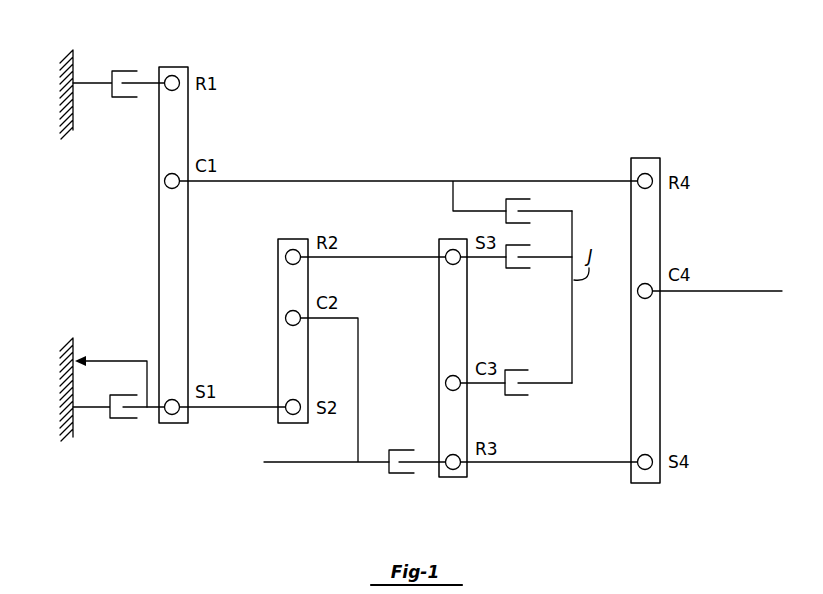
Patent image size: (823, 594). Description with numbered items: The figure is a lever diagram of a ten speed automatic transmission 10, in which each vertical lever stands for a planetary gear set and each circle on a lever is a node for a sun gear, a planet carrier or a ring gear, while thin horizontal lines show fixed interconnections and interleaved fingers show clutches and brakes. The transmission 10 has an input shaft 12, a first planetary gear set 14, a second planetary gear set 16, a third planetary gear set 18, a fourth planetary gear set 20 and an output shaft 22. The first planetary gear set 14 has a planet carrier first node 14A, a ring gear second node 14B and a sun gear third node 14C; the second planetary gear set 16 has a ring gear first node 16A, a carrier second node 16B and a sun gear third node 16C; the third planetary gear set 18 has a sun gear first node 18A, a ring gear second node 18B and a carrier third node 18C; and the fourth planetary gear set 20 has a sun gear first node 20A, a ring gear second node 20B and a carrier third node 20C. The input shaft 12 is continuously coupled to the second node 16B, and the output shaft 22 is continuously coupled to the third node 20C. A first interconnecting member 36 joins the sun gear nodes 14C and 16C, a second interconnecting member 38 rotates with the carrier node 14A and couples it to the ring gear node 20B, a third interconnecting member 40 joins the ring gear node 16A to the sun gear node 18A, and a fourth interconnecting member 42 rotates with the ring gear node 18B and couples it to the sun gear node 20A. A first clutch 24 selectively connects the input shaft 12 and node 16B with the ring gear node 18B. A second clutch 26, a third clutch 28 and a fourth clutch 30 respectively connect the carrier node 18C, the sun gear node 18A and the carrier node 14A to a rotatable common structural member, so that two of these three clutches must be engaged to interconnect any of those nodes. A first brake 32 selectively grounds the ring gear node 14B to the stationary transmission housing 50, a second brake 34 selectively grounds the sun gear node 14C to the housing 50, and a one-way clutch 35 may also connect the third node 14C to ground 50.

The ten speed transmission 10 is at (200, 495).
The input shaft 12 is at (317, 464).
The first planetary gear set 14 is at (143, 234).
The first node of the first planetary gear set 14A is at (165, 181).
The second node of the first planetary gear set 14B is at (175, 91).
The third node of the first planetary gear set 14C is at (172, 415).
The second planetary gear set 16 is at (259, 302).
The first node of the second planetary gear set 16A is at (285, 257).
The second node of the second planetary gear set 16B is at (285, 320).
The third node of the second planetary gear set 16C is at (285, 402).
The third planetary gear set 18 is at (429, 356).
The first node of the third planetary gear set 18A is at (447, 251).
The second node of the third planetary gear set 18B is at (453, 471).
The third node of the third planetary gear set 18C is at (445, 386).
The fourth planetary gear set 20 is at (670, 225).
The first node of the fourth planetary gear set 20A is at (645, 471).
The second node of the fourth planetary gear set 20B is at (644, 173).
The third node of the fourth planetary gear set 20C is at (634, 293).
The output shaft 22 is at (748, 290).
The first clutch 24 is at (403, 474).
The second clutch 26 is at (518, 396).
The third clutch 28 is at (518, 269).
The fourth clutch 30 is at (518, 199).
The first brake 32 is at (125, 71).
The second brake 34 is at (123, 419).
The one-way clutch 35 is at (106, 342).
The first interconnecting member 36 is at (224, 409).
The second interconnecting member 38 is at (305, 180).
The third interconnecting member 40 is at (388, 261).
The fourth interconnecting member 42 is at (558, 464).
The transmission housing 50 is at (62, 70).